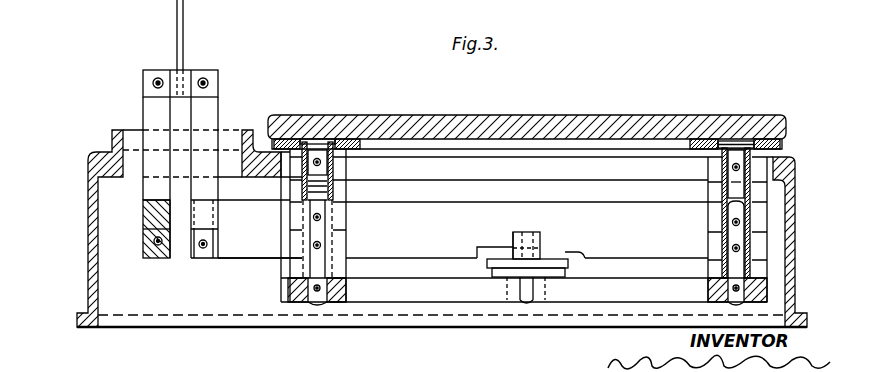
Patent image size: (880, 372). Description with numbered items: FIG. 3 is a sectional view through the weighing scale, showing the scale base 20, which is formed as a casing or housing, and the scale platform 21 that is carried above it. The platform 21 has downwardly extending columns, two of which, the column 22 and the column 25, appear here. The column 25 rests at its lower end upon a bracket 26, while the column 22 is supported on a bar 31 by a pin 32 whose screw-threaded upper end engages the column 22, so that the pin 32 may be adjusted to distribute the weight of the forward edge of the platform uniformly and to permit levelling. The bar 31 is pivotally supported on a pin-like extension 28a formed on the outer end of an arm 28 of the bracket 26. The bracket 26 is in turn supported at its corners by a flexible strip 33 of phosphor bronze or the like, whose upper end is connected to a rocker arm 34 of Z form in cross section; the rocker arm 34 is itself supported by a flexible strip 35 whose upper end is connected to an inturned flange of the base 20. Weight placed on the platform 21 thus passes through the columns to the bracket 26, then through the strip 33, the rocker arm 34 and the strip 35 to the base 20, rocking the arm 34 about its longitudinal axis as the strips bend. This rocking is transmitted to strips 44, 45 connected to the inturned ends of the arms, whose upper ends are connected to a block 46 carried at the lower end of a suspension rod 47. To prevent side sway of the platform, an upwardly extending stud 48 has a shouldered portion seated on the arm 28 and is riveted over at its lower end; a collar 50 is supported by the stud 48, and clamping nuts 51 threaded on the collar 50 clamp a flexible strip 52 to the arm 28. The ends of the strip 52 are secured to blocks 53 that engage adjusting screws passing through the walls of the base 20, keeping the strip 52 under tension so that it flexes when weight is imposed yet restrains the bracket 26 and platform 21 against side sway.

The scale base 20 is at (793, 170).
The scale platform 21 is at (783, 133).
The column 22 is at (347, 167).
The column 25 is at (723, 217).
The bracket 26 is at (760, 292).
The arm 28 is at (448, 292).
The pin-like extension 28a is at (335, 305).
The bar 31 is at (293, 304).
The pin 32 is at (320, 207).
The flexible strip 33 is at (280, 266).
The rocker arm 34 is at (157, 258).
The flexible strip 35 is at (347, 188).
The strip 44 is at (210, 105).
The strip 45 is at (152, 107).
The block 46 is at (165, 70).
The suspension rod 47 is at (185, 5).
The stud 48 is at (525, 232).
The collar 50 is at (508, 232).
The clamping nut 51 is at (552, 262).
The flexible strip 52 is at (551, 277).
The block 53 is at (477, 246).